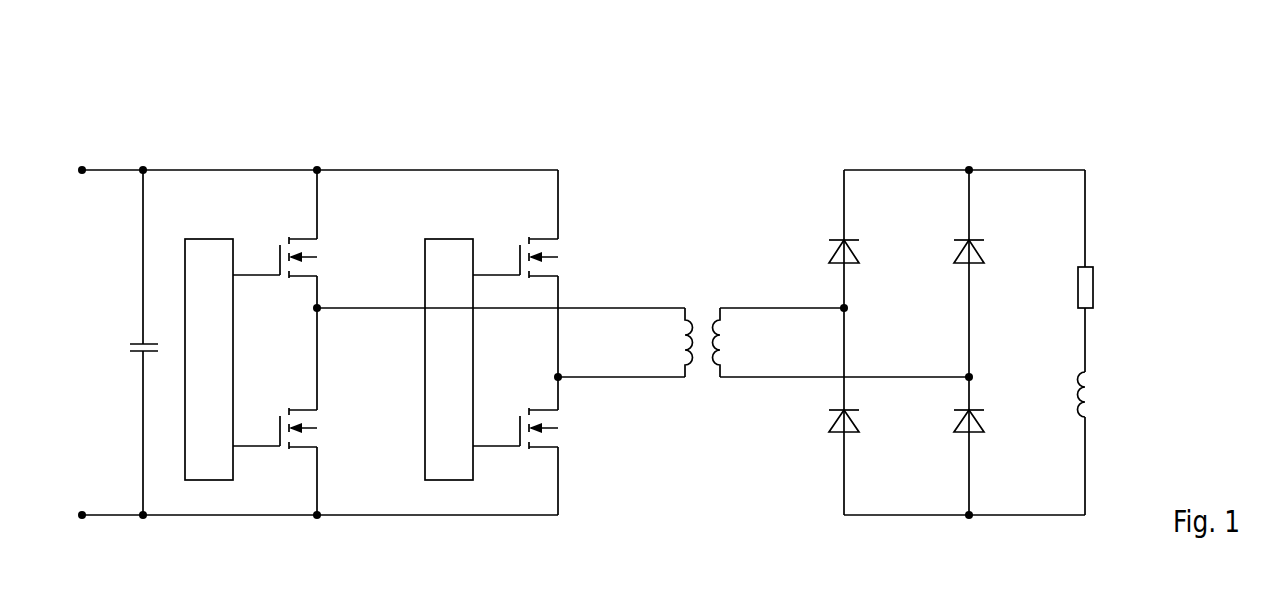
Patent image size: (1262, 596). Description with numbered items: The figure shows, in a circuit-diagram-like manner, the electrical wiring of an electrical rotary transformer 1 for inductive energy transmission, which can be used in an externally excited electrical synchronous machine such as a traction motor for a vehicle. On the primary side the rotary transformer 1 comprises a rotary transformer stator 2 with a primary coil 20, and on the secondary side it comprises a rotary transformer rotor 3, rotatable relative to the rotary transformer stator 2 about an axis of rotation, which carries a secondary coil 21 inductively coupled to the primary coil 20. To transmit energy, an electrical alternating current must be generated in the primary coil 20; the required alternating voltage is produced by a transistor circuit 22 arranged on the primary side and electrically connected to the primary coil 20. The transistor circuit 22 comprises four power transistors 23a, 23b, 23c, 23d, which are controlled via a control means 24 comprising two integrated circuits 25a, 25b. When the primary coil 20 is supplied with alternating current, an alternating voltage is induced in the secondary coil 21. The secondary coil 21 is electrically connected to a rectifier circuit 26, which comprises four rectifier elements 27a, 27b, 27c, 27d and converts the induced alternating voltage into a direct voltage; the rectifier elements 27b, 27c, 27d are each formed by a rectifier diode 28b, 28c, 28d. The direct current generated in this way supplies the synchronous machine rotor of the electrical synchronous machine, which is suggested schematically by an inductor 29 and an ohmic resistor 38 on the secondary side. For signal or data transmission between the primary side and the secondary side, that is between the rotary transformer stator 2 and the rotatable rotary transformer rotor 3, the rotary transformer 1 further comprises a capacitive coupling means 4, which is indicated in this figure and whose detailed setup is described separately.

The rotary transformer 1 is at (1195, 150).
The rotary transformer stator 2 is at (703, 323).
The rotary transformer rotor 3 is at (705, 360).
The capacitive coupling means 4 is at (413, 312).
The primary coil 20 is at (695, 315).
The secondary coil 21 is at (719, 370).
The transistor circuit 22 is at (313, 128).
The power transistor 23a is at (332, 256).
The power transistor 23b is at (572, 256).
The power transistor 23c is at (332, 427).
The power transistor 23d is at (572, 427).
The control means 24 is at (349, 402).
The integrated circuit 25a is at (212, 481).
The integrated circuit 25b is at (452, 481).
The rectifier circuit 26 is at (946, 135).
The rectifier element 27a is at (856, 251).
The rectifier element 27b is at (995, 229).
The rectifier element 27c is at (871, 442).
The rectifier element 27d is at (997, 442).
The rectifier diode 28b is at (981, 251).
The rectifier diode 28c is at (857, 423).
The rectifier diode 28d is at (982, 423).
The inductor 29 is at (1090, 395).
The ohmic resistor 38 is at (1094, 287).